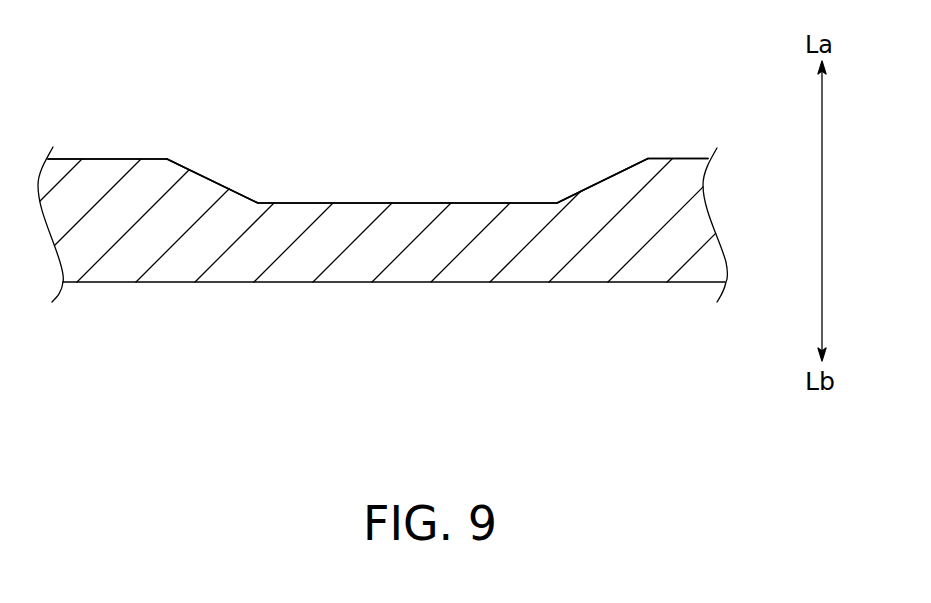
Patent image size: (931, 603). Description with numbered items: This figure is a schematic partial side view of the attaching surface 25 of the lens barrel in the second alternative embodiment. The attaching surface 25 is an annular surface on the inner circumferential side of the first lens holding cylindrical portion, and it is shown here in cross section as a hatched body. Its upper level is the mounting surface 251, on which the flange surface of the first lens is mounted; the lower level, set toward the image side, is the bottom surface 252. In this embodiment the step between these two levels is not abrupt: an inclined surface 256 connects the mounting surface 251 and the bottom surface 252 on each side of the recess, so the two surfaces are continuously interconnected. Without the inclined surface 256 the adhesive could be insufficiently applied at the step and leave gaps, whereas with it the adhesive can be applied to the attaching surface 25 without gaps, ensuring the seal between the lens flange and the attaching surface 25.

The attaching surface 25 is at (95, 122).
The mounting surface 251 is at (107, 159).
The bottom surface 252 is at (395, 203).
The inclined surface 256 is at (208, 178).